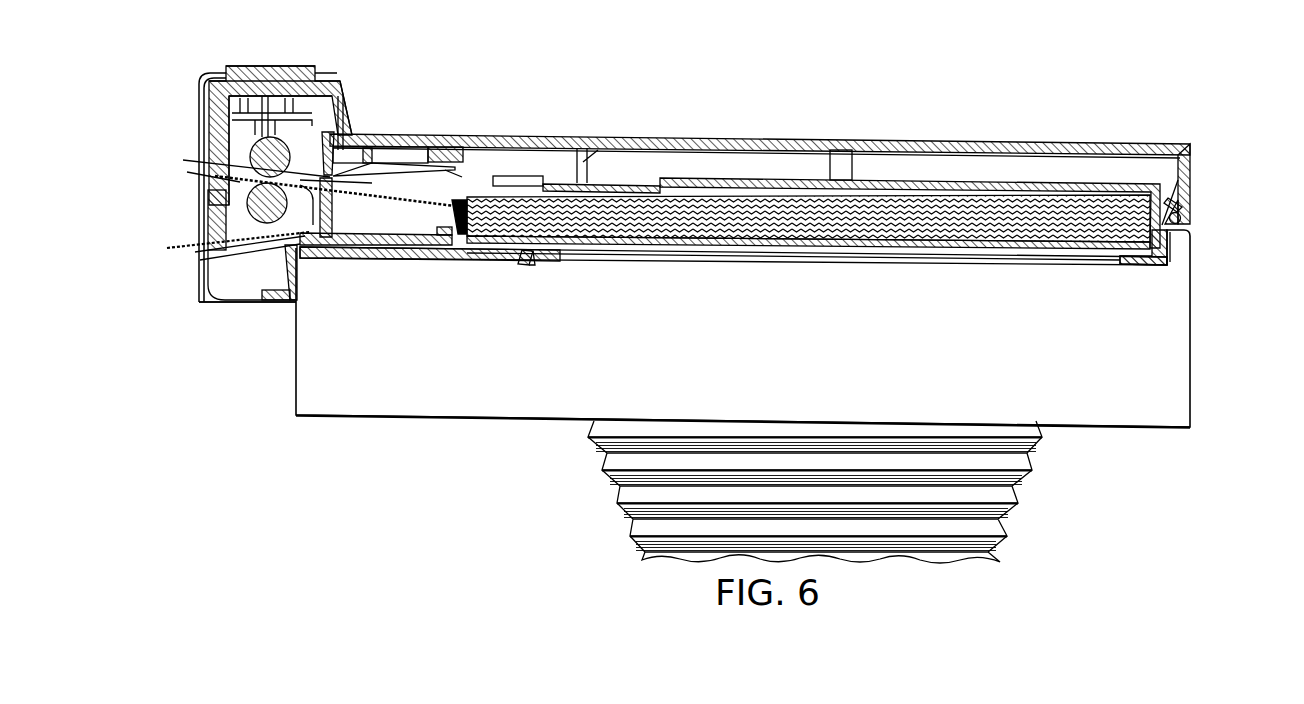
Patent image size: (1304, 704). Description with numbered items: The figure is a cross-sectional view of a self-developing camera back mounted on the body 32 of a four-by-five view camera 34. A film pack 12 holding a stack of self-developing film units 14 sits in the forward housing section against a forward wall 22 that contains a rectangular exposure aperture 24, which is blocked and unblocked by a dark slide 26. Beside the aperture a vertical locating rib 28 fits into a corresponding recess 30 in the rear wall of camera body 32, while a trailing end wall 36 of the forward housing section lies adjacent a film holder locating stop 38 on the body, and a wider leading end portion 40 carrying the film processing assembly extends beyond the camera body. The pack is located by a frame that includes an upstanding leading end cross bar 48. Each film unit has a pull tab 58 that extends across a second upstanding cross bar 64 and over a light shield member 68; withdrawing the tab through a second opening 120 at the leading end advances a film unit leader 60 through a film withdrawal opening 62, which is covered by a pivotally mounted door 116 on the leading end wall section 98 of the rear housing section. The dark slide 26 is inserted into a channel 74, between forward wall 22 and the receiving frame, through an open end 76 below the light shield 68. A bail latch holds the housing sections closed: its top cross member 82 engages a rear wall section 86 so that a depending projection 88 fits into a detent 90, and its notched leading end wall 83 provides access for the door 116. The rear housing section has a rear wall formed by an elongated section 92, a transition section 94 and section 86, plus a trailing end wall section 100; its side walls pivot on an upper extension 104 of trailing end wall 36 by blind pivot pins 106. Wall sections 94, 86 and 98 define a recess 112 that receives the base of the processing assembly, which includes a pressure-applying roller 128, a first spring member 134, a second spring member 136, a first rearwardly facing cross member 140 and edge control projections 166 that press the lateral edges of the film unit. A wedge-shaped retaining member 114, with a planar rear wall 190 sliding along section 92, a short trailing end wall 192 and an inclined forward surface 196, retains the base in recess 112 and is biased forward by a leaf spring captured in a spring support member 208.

The film container or pack 12 is at (995, 186).
The self-developing film units 14 is at (918, 206).
The forward wall 22 is at (432, 262).
The exposure aperture 24 is at (589, 252).
The dark slide 26 is at (255, 247).
The vertical locating rib 28 is at (520, 261).
The recess 30 is at (537, 263).
The camera body 32 is at (1175, 383).
The view camera 34 is at (1044, 459).
The trailing end wall 36 is at (1168, 245).
The film holder locating stop 38 is at (1178, 258).
The leading end portion 40 is at (244, 304).
The leading end cross bar 48 is at (443, 227).
The pull tab 58 is at (177, 247).
The film unit leader 60 is at (196, 163).
The film withdrawal opening 62 is at (190, 172).
The second upstanding cross bar 64 is at (340, 205).
The light shield member 68 is at (247, 243).
The channel 74 is at (392, 248).
The open end 76 is at (303, 238).
The top cross member 82 is at (313, 80).
The notched leading end wall 83 is at (198, 82).
The rear wall section 86 is at (310, 82).
The depending projection 88 is at (255, 80).
The recess or detent 90 is at (265, 83).
The elongated section 92 is at (710, 140).
The transition section 94 is at (345, 108).
The leading end wall section 98 is at (212, 105).
The trailing end wall section 100 is at (1192, 150).
The upper extension 104 is at (1182, 218).
The blind pivot pins 106 is at (1184, 207).
The recess 112 is at (277, 92).
The retaining member 114 is at (438, 167).
The door 116 is at (208, 182).
The second opening 120 is at (212, 252).
The pressure-applying roller 128 is at (258, 150).
The first spring member 134 is at (340, 128).
The second spring member 136 is at (338, 95).
The first rearwardly facing cross member 140 is at (380, 155).
The second edge control projections 166 is at (355, 182).
The planar rear wall 190 is at (415, 134).
The trailing end wall 192 is at (468, 158).
The inclined forward wall or surface 196 is at (415, 166).
The spring support member 208 is at (580, 172).